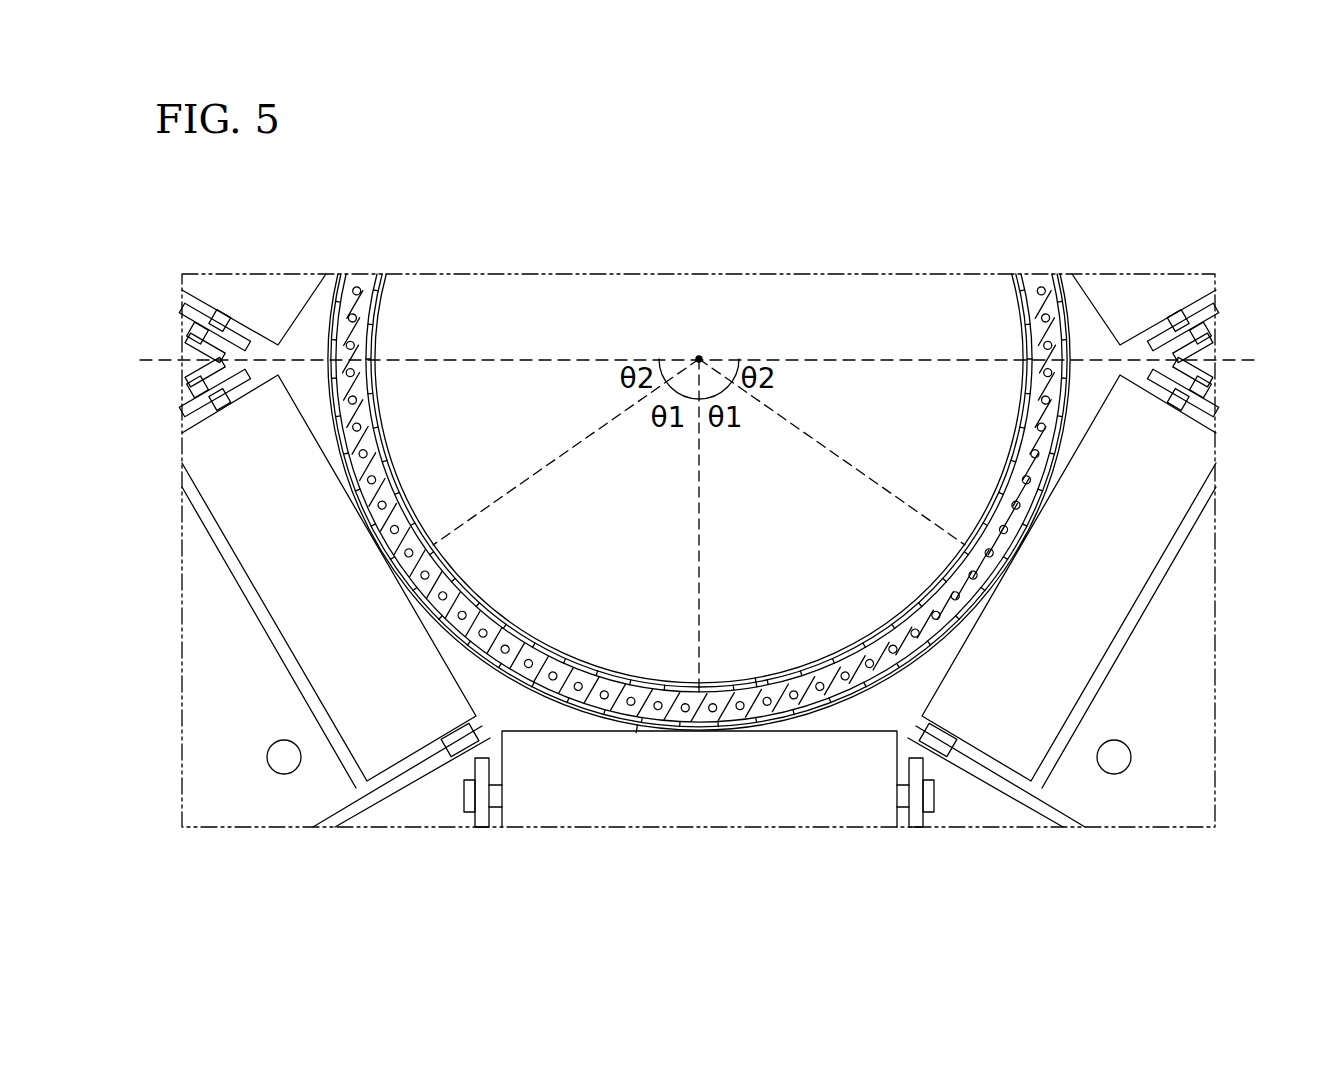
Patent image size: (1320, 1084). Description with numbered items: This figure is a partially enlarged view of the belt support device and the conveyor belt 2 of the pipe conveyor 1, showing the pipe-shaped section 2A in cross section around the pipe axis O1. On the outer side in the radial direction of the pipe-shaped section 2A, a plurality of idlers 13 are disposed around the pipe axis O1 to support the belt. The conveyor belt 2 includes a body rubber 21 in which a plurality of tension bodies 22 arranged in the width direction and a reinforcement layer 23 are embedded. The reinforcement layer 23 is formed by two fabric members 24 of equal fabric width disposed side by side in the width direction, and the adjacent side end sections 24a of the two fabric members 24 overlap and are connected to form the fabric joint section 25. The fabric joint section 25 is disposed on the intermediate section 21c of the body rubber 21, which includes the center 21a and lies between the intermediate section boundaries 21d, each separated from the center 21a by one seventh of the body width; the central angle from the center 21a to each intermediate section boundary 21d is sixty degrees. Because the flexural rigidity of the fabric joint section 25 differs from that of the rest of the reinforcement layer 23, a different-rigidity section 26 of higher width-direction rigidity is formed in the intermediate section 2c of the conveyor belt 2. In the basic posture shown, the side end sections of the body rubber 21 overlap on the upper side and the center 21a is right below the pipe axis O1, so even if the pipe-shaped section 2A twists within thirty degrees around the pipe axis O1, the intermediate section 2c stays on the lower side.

The pipe conveyor 1 is at (1183, 203).
The conveyor belt 2 is at (700, 547).
The pipe-shaped section 2A is at (382, 305).
The intermediate section 2c is at (484, 676).
The idler 13 is at (242, 500).
The body rubber 21 is at (699, 438).
The center 21a is at (698, 683).
The intermediate section 21c is at (556, 700).
The intermediate section boundary 21d is at (436, 545).
The tension body 22 is at (430, 572).
The reinforcement layer 23 is at (700, 529).
The fabric member 24 is at (1032, 296).
The side end section 24a is at (763, 692).
The fabric joint section 25 is at (699, 608).
The different-rigidity section 26 is at (755, 678).
The pipe axis O1 is at (699, 359).